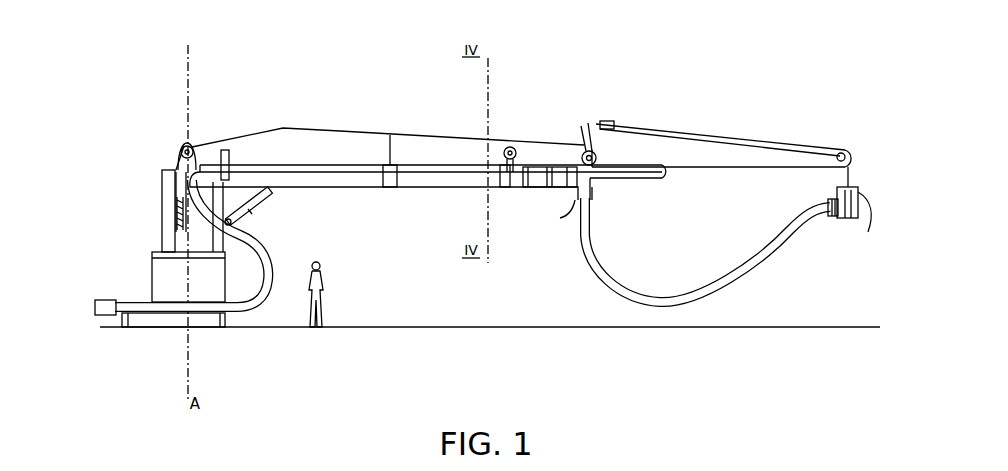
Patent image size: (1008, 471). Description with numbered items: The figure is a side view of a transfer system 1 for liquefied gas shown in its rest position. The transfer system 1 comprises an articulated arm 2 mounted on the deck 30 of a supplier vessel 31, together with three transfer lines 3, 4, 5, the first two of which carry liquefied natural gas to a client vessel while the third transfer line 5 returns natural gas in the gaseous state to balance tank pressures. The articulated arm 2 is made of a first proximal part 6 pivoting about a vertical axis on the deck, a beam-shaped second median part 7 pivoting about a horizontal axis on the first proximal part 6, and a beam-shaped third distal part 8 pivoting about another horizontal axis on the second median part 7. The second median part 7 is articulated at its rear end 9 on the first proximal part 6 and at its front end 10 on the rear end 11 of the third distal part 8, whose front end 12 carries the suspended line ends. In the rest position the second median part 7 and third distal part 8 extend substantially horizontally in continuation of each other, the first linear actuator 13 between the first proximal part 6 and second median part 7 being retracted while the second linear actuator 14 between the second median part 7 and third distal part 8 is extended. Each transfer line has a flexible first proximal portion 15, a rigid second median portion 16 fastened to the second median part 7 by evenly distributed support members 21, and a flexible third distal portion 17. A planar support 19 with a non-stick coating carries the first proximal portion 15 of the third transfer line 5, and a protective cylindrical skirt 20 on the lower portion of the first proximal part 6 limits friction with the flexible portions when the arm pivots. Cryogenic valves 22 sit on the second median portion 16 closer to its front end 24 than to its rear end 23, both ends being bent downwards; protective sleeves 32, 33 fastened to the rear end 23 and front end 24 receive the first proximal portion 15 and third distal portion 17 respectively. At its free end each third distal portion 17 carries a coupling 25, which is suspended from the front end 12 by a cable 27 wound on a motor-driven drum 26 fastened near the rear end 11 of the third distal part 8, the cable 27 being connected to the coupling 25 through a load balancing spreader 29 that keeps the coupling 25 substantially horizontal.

The transfer system 1 is at (637, 98).
The articulated arm 2 is at (428, 149).
The first transfer line 3 is at (428, 161).
The second transfer line 4 is at (428, 161).
The third transfer line 5 is at (428, 161).
The first proximal part 6 is at (160, 222).
The second median part 7 is at (343, 136).
The third distal part 8 is at (721, 128).
The rear end of second median part 9 is at (180, 147).
The front end of second median part 10 is at (576, 140).
The rear end of third distal part 11 is at (589, 125).
The front end of third distal part 12 is at (822, 148).
The first linear actuator 13 is at (255, 212).
The second linear actuator 14 is at (660, 127).
The first proximal portion 15 is at (244, 311).
The second median portion 16 is at (365, 188).
The third distal portion 17 is at (736, 292).
The planar support 19 is at (165, 318).
The protective cylindrical skirt 20 is at (125, 330).
The support member 21 is at (228, 145).
The cryogenic valve 22 is at (514, 190).
The rear end of second median portion 23 is at (172, 192).
The front end of second median portion 24 is at (597, 188).
The coupling 25 is at (843, 220).
The drum 26 is at (612, 120).
The cable 27 is at (852, 150).
The load balancing spreader 29 is at (866, 216).
The deck 30 is at (662, 329).
The supplier vessel 31 is at (430, 352).
The protective sleeve 32 is at (168, 205).
The protective sleeve 33 is at (614, 216).